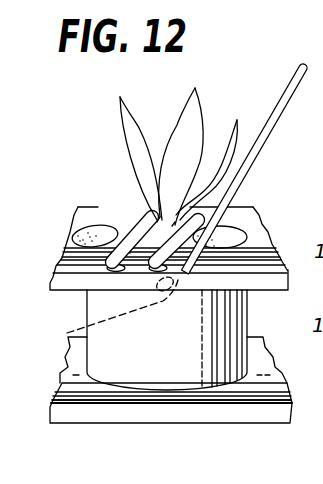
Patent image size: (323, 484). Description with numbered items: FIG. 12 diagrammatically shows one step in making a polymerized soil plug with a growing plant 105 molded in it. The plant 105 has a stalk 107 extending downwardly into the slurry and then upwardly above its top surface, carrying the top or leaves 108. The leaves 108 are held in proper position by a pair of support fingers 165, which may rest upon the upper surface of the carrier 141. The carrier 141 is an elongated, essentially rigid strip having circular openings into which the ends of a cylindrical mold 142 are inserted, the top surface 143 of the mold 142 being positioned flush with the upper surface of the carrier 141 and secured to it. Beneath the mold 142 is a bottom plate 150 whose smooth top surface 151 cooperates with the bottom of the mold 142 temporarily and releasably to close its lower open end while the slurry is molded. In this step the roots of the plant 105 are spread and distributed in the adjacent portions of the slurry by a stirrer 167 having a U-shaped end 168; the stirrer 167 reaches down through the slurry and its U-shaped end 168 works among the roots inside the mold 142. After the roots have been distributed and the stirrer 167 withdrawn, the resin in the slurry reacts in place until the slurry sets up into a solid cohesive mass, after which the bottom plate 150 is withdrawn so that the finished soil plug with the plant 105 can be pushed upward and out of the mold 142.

The growing plant 105 is at (166, 209).
The stalk 107 is at (133, 239).
The leaves 108 is at (177, 125).
The carrier 141 is at (90, 227).
The mold 142 is at (118, 310).
The top surface of mold 143 is at (95, 243).
The bottom plate 150 is at (139, 425).
The top surface of bottom plate 151 is at (241, 399).
The support fingers 165 is at (97, 225).
The stirrer 167 is at (277, 113).
The U-shaped end 168 is at (103, 311).